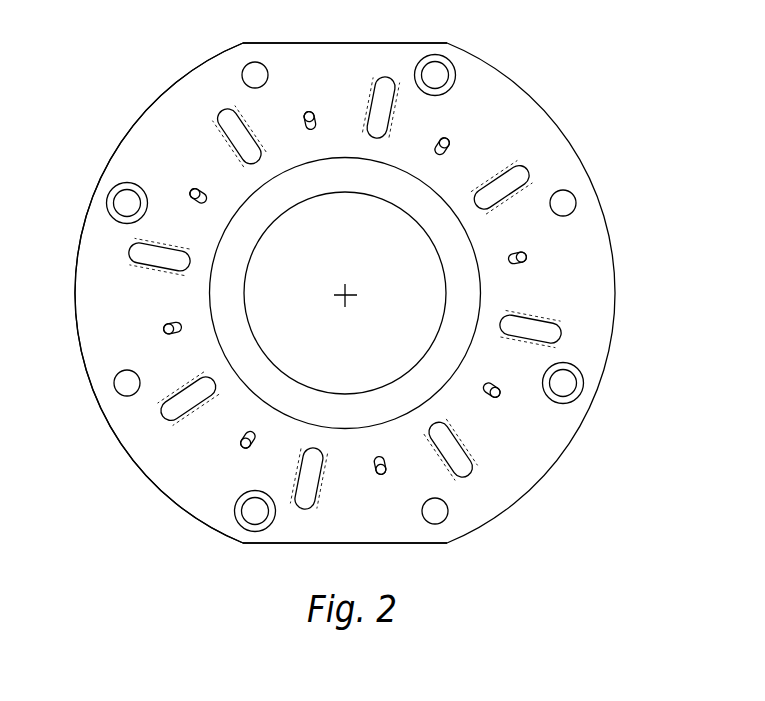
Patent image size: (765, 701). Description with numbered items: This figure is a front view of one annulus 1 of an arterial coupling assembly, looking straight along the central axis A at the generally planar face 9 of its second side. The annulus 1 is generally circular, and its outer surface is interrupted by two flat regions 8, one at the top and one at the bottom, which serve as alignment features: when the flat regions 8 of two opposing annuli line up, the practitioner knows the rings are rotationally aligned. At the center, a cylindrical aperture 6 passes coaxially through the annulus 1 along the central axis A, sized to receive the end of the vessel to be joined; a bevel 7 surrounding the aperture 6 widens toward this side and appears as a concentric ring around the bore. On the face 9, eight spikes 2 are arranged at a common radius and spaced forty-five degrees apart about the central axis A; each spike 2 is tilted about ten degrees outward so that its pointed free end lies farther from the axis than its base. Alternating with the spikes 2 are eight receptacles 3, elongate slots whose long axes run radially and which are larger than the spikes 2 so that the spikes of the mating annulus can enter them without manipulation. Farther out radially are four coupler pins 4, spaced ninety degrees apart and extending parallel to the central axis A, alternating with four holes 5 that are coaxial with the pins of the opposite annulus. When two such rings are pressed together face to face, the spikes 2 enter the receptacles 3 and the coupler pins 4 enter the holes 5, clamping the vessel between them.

The annulus 1 is at (157, 105).
The spikes 2 is at (533, 263).
The receptacles 3 is at (160, 418).
The coupler pins 4 is at (578, 193).
The holes 5 is at (570, 398).
The aperture 6 is at (408, 370).
The bevel 7 is at (243, 244).
The flat regions 8 is at (362, 36).
The face 9 is at (105, 308).
The central axis A is at (352, 300).